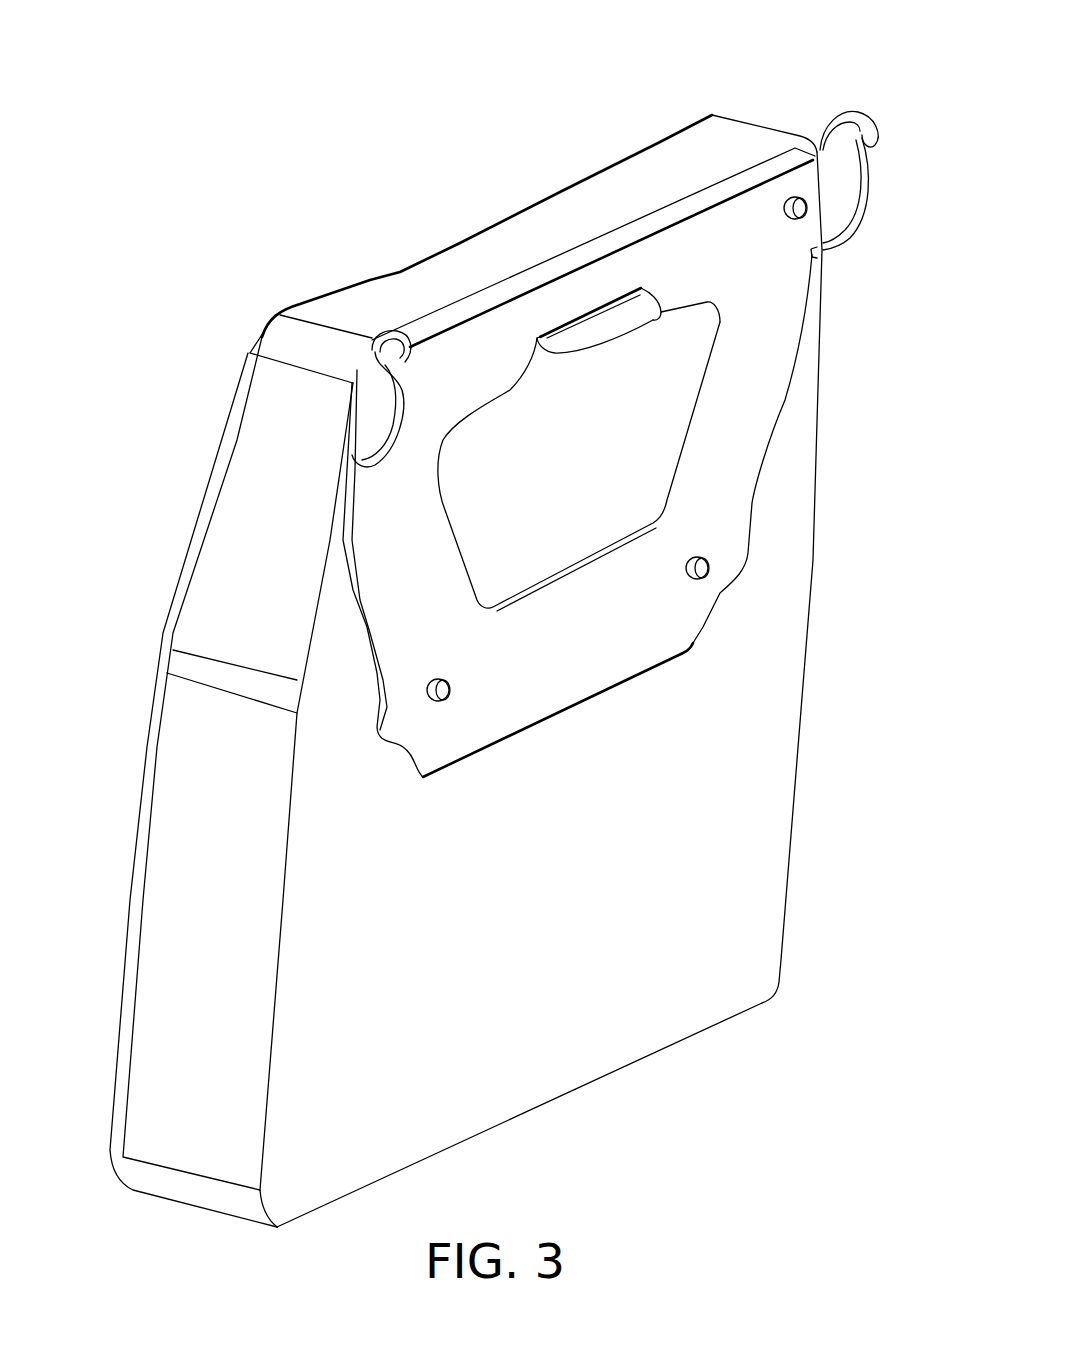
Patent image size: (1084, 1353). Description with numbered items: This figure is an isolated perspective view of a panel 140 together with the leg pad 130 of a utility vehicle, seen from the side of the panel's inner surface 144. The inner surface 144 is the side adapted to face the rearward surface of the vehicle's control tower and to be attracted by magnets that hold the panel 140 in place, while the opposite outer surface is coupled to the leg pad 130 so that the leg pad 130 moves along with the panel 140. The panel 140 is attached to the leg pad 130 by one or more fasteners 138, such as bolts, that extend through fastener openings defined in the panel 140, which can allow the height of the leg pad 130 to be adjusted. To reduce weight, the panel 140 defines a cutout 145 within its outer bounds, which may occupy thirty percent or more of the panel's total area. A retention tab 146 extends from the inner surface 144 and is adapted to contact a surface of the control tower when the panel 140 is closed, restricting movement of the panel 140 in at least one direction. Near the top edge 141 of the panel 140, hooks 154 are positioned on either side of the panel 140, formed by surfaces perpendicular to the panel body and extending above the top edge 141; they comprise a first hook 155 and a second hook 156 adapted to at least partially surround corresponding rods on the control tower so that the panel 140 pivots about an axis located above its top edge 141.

The leg pad 130 is at (553, 875).
The fasteners 138 is at (785, 202).
The panel 140 is at (478, 365).
The top edge 141 is at (590, 253).
The inner surface 144 is at (570, 637).
The cutout 145 is at (593, 437).
The retention tab 146 is at (607, 327).
The hooks 154 is at (822, 84).
The first hook 155 is at (863, 128).
The second hook 156 is at (387, 345).